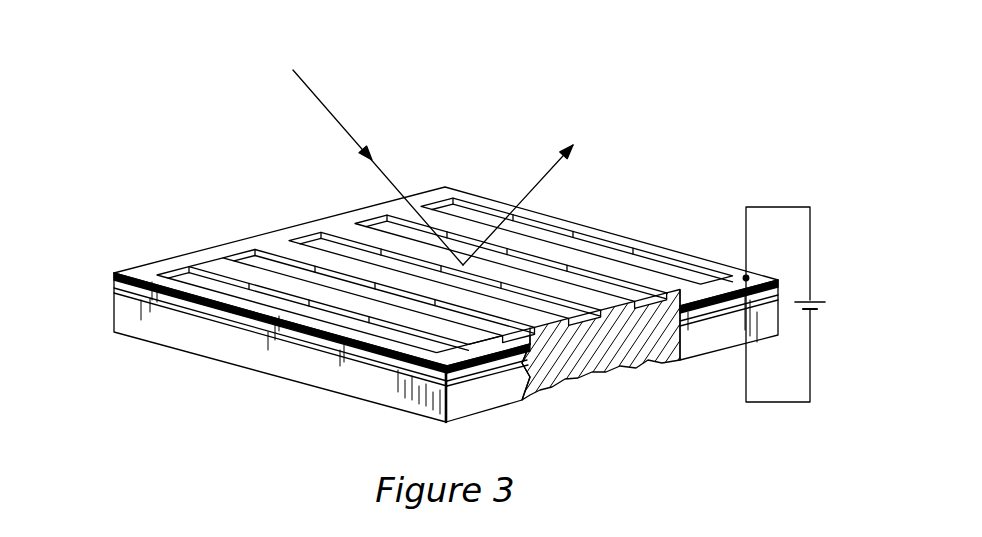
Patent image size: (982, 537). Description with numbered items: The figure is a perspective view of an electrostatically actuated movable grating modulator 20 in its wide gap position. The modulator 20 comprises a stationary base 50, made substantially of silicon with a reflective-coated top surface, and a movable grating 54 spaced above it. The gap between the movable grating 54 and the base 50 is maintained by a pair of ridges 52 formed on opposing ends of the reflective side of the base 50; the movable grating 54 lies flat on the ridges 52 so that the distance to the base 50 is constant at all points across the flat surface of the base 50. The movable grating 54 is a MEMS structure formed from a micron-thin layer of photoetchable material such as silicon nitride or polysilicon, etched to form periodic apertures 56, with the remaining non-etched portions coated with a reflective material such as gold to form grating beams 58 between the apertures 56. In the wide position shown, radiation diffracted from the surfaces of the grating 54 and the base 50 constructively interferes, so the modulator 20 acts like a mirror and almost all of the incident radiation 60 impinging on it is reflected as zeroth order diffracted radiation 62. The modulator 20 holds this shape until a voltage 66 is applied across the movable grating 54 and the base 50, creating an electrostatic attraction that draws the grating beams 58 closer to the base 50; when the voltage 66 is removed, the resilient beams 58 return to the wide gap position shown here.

The electrostatically actuated movable grating modulator 20 is at (153, 38).
The stationary base 50 is at (178, 333).
The ridges 52 is at (113, 292).
The movable grating 54 is at (114, 277).
The apertures 56 is at (203, 283).
The grating beams 58 is at (218, 265).
The incident radiation 60 is at (336, 118).
The 0th order diffracted radiation 62 is at (533, 187).
The voltage 66 is at (822, 300).